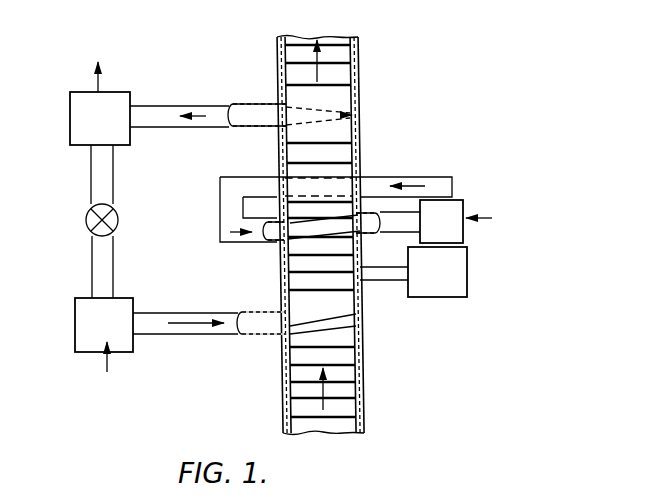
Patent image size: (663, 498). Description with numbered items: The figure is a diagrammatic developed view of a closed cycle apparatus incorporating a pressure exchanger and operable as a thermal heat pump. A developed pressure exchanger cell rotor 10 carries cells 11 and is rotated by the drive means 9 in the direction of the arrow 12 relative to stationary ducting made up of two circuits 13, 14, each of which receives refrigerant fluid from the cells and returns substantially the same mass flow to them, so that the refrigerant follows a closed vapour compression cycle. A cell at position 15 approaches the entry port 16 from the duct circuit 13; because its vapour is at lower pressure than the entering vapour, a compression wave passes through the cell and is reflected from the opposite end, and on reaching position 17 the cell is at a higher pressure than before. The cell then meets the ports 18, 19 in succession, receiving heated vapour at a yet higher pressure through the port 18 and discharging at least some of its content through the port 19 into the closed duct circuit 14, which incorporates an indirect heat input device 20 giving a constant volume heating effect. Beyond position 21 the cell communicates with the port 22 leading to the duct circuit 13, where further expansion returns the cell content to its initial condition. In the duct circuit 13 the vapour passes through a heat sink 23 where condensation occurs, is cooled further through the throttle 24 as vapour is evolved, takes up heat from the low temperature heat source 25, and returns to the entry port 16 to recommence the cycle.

The drive means 9 is at (443, 297).
The pressure exchanger cell rotor 10 is at (358, 372).
The cells 11 is at (330, 152).
The arrow 12 is at (317, 60).
The duct circuit 13 is at (176, 105).
The duct circuit 14 is at (220, 208).
The cell position 15 is at (340, 339).
The entry port 16 is at (270, 335).
The cell position 17 is at (340, 300).
The port 18 is at (273, 241).
The port 19 is at (375, 233).
The indirect heat input device 20 is at (448, 229).
The cell position 21 is at (297, 132).
The port 22 is at (277, 105).
The heat sink 23 is at (106, 133).
The throttle 24 is at (88, 226).
The low temperature heat source 25 is at (109, 325).